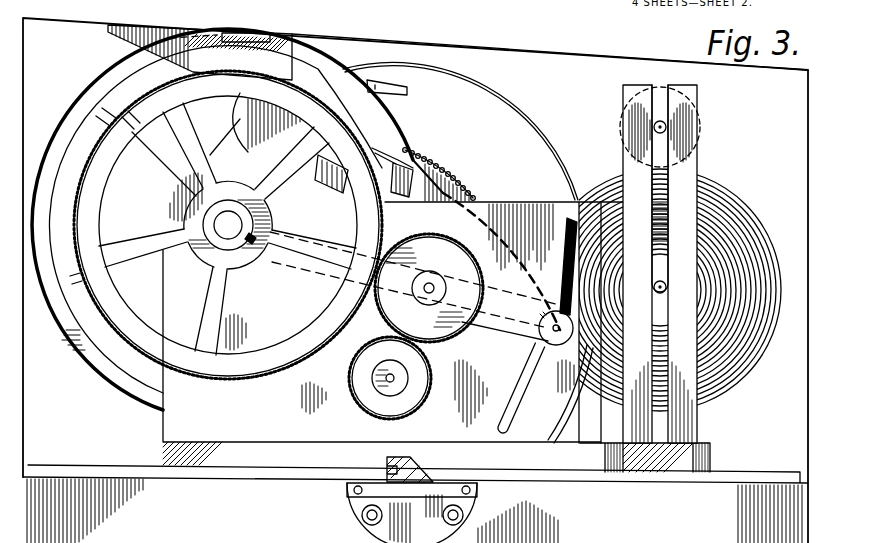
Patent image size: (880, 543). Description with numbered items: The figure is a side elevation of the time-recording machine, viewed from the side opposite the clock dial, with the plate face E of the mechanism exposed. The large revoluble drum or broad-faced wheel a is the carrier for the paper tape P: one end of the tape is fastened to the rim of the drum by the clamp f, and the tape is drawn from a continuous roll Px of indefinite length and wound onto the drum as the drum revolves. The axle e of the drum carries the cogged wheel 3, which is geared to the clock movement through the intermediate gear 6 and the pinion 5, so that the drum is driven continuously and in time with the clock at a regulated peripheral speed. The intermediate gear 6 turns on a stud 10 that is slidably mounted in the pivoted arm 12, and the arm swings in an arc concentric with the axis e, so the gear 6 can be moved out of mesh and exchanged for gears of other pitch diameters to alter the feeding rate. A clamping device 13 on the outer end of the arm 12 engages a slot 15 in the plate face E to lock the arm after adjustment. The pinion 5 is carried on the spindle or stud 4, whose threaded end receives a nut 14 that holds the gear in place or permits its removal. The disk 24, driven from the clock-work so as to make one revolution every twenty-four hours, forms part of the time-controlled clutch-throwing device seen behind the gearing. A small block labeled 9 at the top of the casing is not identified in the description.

The cogged wheel 3 is at (95, 173).
The axle of the drum e is at (228, 222).
The paper tape P is at (92, 90).
The revoluble drum a is at (228, 26).
The block on casing 9 is at (253, 37).
The clamp f is at (413, 155).
The disk 24 is at (457, 197).
The intermediate gear 6 is at (467, 327).
The stud 10 is at (429, 288).
The pivoted arm 12 is at (513, 328).
The clamping device 13 is at (566, 314).
The slot 15 is at (513, 392).
The pinion 5 is at (417, 398).
The stud or spindle 4 is at (392, 378).
The nut 14 is at (382, 390).
The plate face E is at (393, 333).
The continuous roll of tape Px is at (722, 190).